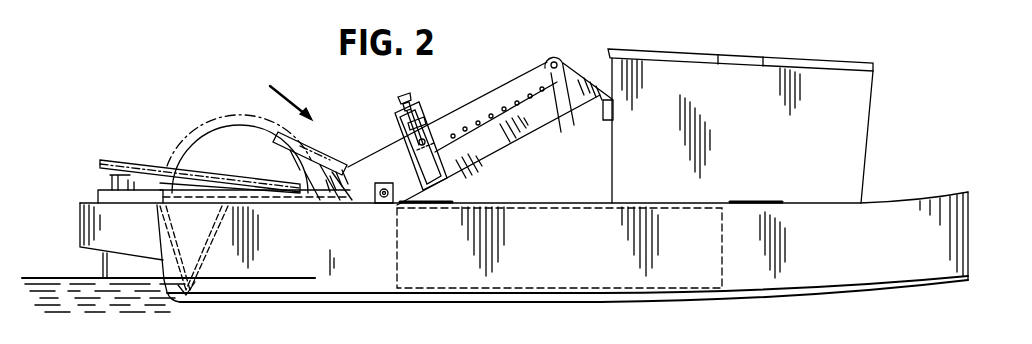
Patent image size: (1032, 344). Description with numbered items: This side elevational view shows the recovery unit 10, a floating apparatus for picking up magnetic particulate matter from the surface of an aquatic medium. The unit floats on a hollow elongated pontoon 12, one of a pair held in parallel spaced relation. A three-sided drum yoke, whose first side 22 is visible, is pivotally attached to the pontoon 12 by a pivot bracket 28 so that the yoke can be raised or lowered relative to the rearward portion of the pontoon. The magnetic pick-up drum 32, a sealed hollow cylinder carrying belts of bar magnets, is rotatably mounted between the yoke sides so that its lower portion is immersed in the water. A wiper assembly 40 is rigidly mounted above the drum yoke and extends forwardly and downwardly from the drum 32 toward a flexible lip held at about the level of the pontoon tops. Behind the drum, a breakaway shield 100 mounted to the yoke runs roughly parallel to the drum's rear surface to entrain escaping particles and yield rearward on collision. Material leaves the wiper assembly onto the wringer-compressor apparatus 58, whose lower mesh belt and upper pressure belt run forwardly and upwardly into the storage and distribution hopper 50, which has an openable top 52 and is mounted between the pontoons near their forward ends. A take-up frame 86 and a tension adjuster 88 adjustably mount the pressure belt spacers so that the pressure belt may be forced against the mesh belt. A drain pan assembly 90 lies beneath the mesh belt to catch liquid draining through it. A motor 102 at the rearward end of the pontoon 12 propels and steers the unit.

The recovery unit 10 is at (278, 95).
The pontoon 12 is at (905, 212).
The first side of drum yoke 22 is at (155, 163).
The pivot bracket 28 is at (375, 200).
The magnetic pick-up drum 32 is at (220, 142).
The wiper assembly 40 is at (346, 146).
The storage and distribution hopper 50 is at (828, 64).
The openable top 52 is at (742, 62).
The wringer-compressor apparatus 58 is at (570, 50).
The take-up frame 86 is at (424, 108).
The tension adjuster 88 is at (556, 78).
The drain pan assembly 90 is at (498, 135).
The breakaway shield 100 is at (172, 300).
The motor 102 is at (100, 260).